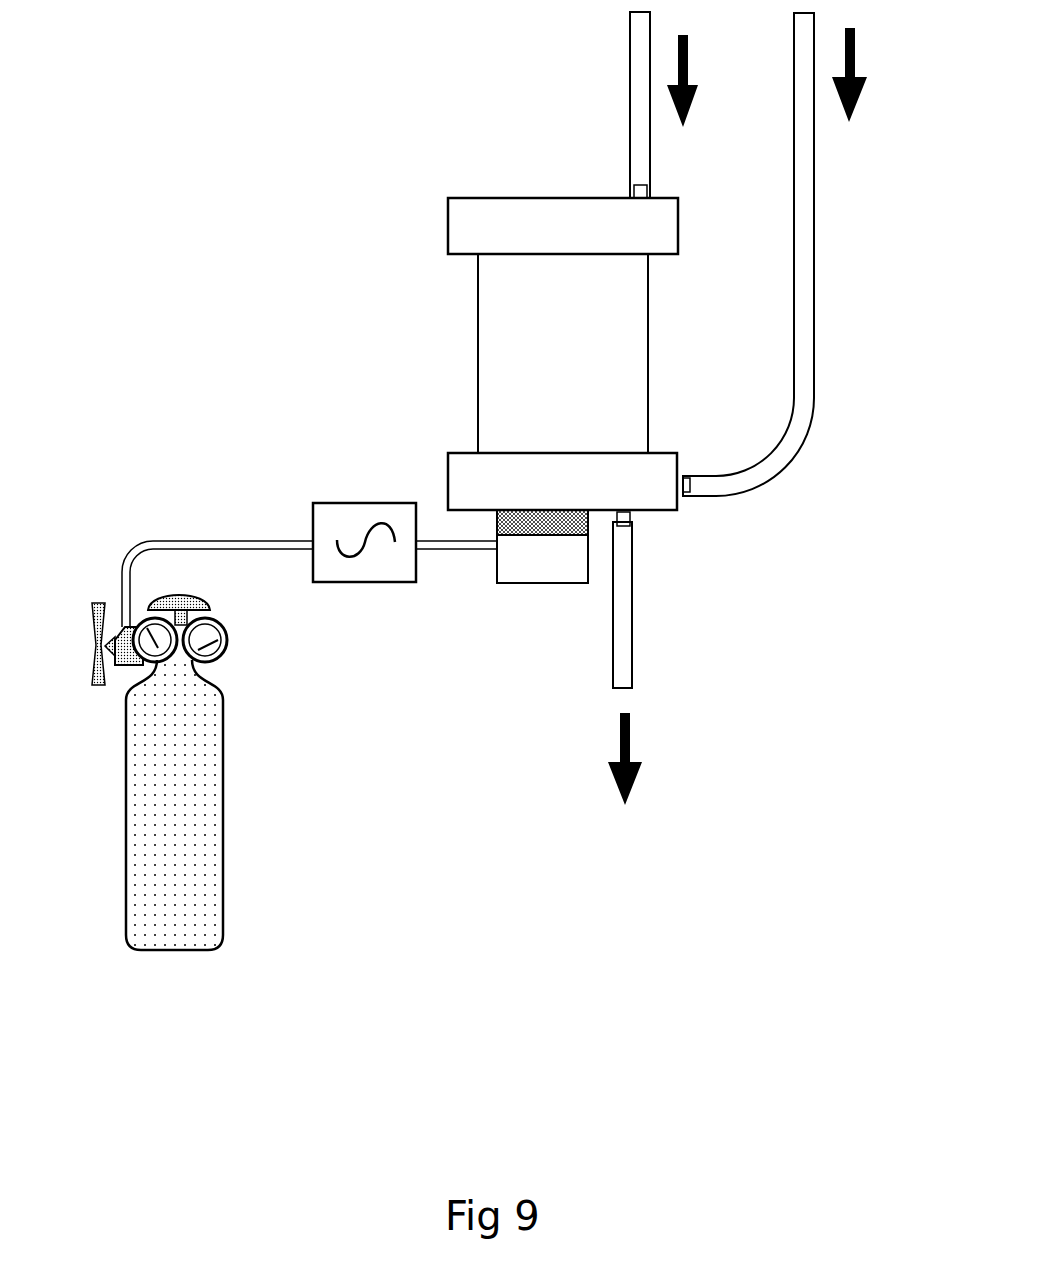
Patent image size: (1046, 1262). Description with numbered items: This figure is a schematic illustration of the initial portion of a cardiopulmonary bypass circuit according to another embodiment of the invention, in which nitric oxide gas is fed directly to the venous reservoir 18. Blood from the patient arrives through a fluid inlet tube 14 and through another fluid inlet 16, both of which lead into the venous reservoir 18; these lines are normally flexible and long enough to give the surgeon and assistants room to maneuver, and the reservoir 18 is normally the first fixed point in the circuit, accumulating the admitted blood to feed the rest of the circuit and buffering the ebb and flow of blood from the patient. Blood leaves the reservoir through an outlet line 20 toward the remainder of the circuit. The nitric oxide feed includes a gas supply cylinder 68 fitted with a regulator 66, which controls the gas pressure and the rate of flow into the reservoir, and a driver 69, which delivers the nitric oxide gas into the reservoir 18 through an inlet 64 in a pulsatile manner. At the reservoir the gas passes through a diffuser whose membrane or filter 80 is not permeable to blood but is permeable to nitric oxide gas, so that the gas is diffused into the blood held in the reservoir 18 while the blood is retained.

The fluid inlet tube 14 is at (630, 80).
The fluid inlet 16 is at (814, 298).
The venous reservoir 18 is at (579, 376).
The outlet tube 20 is at (632, 672).
The inlet 64 is at (432, 549).
The regulator 66 is at (122, 665).
The gas cylinder 68 is at (202, 821).
The driver 69 is at (347, 503).
The membrane or filter 80 is at (563, 535).